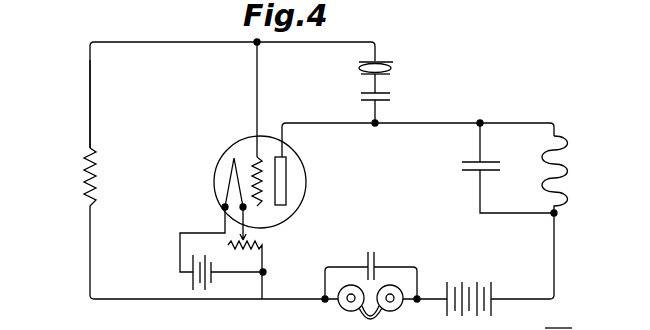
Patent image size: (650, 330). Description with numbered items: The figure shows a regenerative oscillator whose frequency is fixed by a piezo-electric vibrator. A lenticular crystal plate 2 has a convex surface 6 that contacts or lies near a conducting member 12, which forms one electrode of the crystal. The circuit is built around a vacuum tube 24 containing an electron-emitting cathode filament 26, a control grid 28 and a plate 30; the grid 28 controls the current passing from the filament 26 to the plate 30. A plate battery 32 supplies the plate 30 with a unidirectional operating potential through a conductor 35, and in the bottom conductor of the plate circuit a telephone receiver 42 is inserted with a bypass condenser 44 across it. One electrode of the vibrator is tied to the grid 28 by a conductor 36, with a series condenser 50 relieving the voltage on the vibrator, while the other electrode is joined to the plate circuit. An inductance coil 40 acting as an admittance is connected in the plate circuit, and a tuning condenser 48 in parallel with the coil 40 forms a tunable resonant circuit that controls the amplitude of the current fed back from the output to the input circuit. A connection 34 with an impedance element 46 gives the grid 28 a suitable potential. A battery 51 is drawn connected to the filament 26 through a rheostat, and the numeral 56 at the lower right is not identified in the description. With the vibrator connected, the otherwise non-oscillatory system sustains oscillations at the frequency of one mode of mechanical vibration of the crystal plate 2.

The lenticular piezo-electric crystal plate 2 is at (393, 68).
The convex surface 6 is at (366, 75).
The conducting member 12 is at (385, 61).
The vacuum tube 24 is at (238, 125).
The cathode filament 26 is at (228, 177).
The control grid 28 is at (260, 207).
The plate 30 is at (287, 172).
The plate battery 32 is at (493, 277).
The connection 34 is at (88, 65).
The conductor 35 is at (340, 254).
The conductor 36 is at (310, 44).
The inductance coil 40 is at (565, 182).
The telephone receiver 42 is at (352, 313).
The bypass condenser 44 is at (377, 258).
The impedance element 46 is at (82, 184).
The tuning condenser 48 is at (474, 174).
The condenser 50 is at (393, 98).
The battery 51 is at (190, 276).
The conductor 56 is at (577, 321).